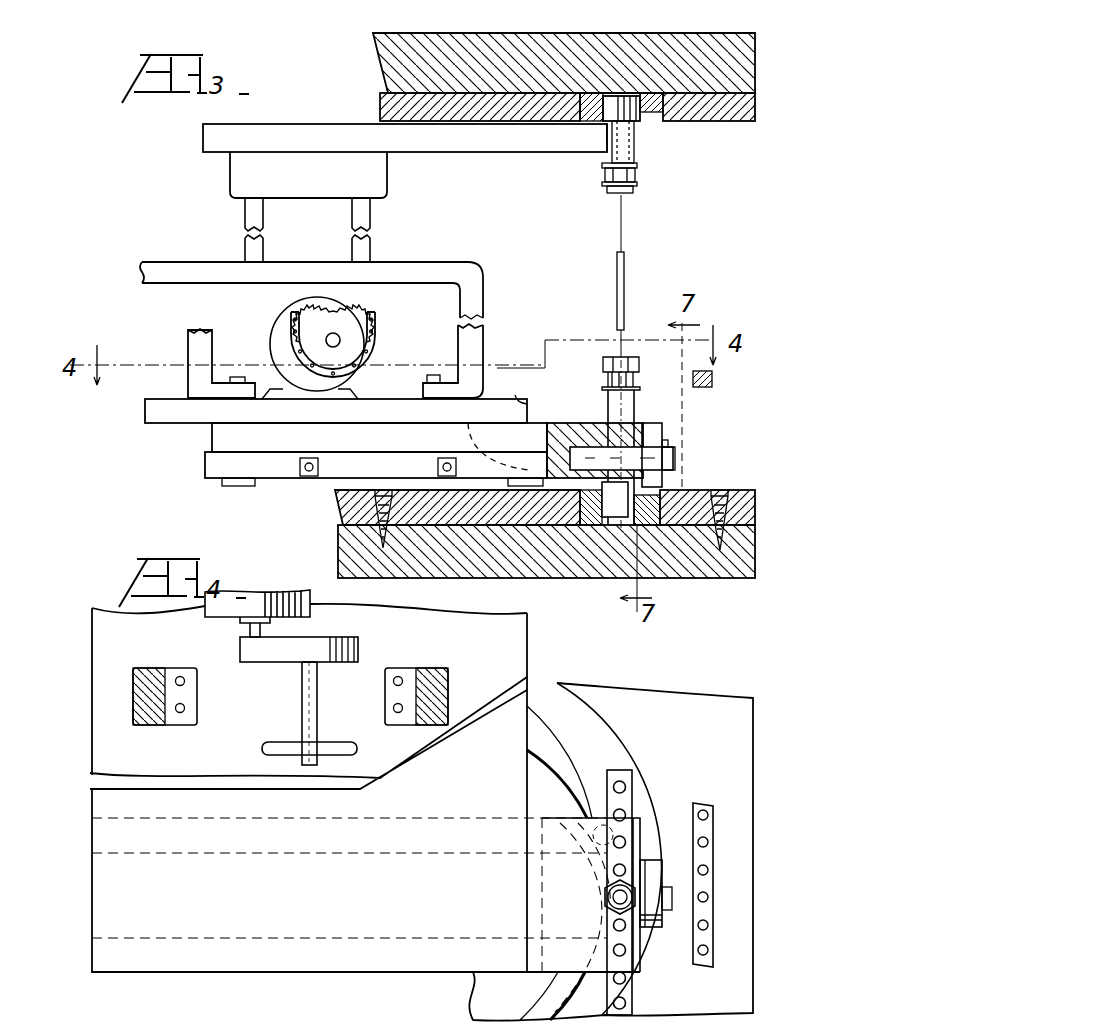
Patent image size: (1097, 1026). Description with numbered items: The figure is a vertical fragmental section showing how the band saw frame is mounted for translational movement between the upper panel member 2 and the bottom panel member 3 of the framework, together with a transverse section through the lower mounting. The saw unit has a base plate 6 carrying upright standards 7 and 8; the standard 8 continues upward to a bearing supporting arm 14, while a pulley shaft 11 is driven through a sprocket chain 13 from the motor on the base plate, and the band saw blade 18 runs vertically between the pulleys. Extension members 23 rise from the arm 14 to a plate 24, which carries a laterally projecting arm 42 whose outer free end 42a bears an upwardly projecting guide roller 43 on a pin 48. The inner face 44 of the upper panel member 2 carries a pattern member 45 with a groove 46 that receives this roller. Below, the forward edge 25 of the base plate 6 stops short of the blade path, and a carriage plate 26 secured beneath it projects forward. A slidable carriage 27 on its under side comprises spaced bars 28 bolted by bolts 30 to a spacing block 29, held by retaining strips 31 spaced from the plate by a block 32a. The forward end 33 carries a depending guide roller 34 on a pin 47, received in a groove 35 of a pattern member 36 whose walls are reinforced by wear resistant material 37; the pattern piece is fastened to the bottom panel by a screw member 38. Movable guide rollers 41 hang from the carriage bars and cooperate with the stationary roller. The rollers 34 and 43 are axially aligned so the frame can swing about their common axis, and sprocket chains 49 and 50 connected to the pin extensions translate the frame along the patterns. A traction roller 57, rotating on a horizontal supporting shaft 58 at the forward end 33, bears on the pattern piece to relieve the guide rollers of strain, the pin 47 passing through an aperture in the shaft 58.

In FIG. 3, the upper panel member 2 is at (392, 48).
In FIG. 3, the bottom panel member 3 is at (698, 568).
In FIG. 3, the base plate 6 is at (148, 408).
In FIG. 4, the base plate 6 is at (105, 750).
In FIG. 3, the upright standard 7 is at (470, 346).
In FIG. 4, the upright standard 7 is at (428, 670).
In FIG. 3, the upright standard 8 is at (196, 338).
In FIG. 4, the upright standard 8 is at (160, 717).
In FIG. 3, the pulley shaft 11 is at (300, 322).
In FIG. 4, the pulley shaft 11 is at (233, 606).
In FIG. 3, the sprocket chain 13 is at (362, 332).
In FIG. 4, the sprocket chain 13 is at (283, 744).
In FIG. 3, the bearing supporting arm 14 is at (390, 270).
In FIG. 3, the band saw blade 18 is at (625, 268).
In FIG. 3, the extension members 23 is at (352, 218).
In FIG. 3, the plate 24 is at (238, 172).
In FIG. 3, the forward edge 25 is at (514, 396).
In FIG. 3, the carriage plate 26 is at (225, 440).
In FIG. 4, the carriage plate 26 is at (545, 828).
In FIG. 3, the carriage 27 is at (196, 457).
In FIG. 3, the spaced bars 28 is at (217, 468).
In FIG. 3, the spacing block 29 is at (470, 420).
In FIG. 3, the bolts 30 is at (310, 462).
In FIG. 3, the retaining strips 31 is at (237, 487).
In FIG. 3, the block 32a is at (570, 457).
In FIG. 3, the forward end 33 is at (606, 432).
In FIG. 3, the guide roller 34 is at (614, 508).
In FIG. 3, the groove 35 is at (600, 502).
In FIG. 4, the groove 35 is at (558, 752).
In FIG. 3, the pattern member 36 is at (742, 497).
In FIG. 4, the pattern member 36 is at (692, 707).
In FIG. 3, the wear resistant material 37 is at (668, 488).
In FIG. 4, the wear resistant material 37 is at (596, 778).
In FIG. 3, the screw member 38 is at (370, 504).
In FIG. 4, the movable guide rollers 41 is at (578, 850).
In FIG. 3, the laterally projecting arm 42 is at (500, 143).
In FIG. 3, the outer free end 42a is at (600, 143).
In FIG. 3, the guide roller 43 is at (614, 99).
In FIG. 3, the inner face 44 is at (518, 93).
In FIG. 3, the pattern member 45 is at (380, 108).
In FIG. 3, the groove 46 is at (655, 110).
In FIG. 3, the pin 47 is at (626, 440).
In FIG. 4, the pin 47 is at (604, 897).
In FIG. 3, the pin 48 is at (634, 140).
In FIG. 3, the sprocket chain 49 is at (606, 378).
In FIG. 4, the sprocket chain 49 is at (700, 812).
In FIG. 3, the sprocket chain 50 is at (638, 180).
In FIG. 3, the traction roller 57 is at (662, 432).
In FIG. 4, the traction roller 57 is at (652, 930).
In FIG. 3, the supporting shaft 58 is at (676, 456).
In FIG. 4, the supporting shaft 58 is at (673, 893).